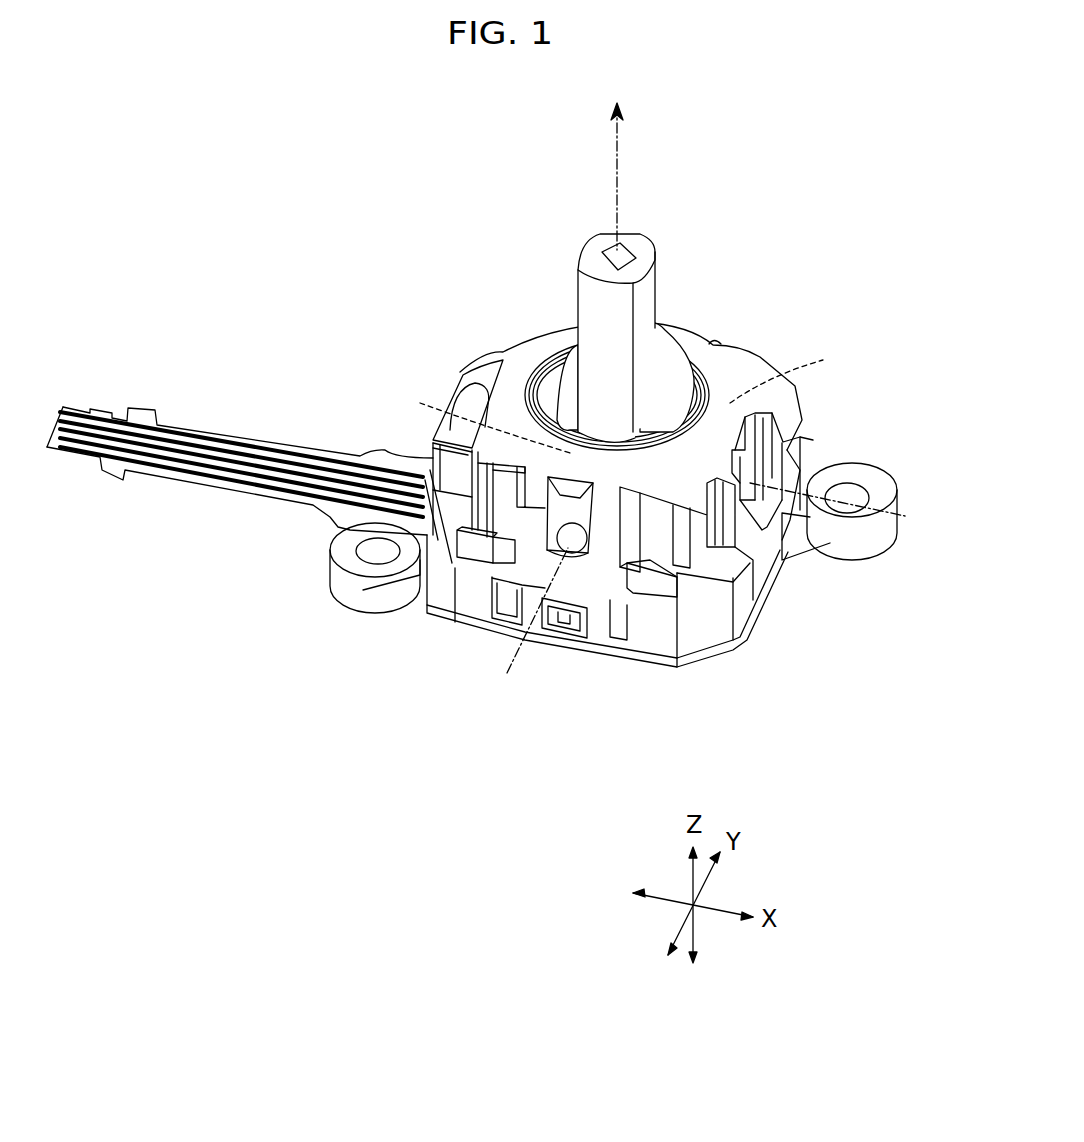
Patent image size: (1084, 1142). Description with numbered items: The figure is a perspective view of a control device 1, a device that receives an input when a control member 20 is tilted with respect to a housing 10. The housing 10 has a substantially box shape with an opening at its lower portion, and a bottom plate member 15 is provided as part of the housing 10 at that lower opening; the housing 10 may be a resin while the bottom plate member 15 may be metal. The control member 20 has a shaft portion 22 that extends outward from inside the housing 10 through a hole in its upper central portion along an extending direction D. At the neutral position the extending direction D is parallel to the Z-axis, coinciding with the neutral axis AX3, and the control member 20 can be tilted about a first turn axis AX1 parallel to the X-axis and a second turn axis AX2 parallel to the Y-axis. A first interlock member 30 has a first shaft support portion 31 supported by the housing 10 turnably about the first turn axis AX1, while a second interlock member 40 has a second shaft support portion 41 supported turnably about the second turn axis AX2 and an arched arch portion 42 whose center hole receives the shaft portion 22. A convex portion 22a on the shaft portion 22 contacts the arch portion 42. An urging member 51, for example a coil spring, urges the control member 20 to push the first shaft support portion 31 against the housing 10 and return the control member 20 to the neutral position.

The control device 1 is at (504, 376).
The housing 10 is at (727, 363).
The bottom plate member 15 is at (743, 598).
The control member 20 is at (618, 333).
The shaft portion 22 is at (669, 333).
The convex portion 22a is at (650, 372).
The first interlock member 30 is at (785, 352).
The first shaft support portion 31 is at (743, 470).
The second interlock member 40 is at (553, 363).
The second shaft support portion 41 is at (587, 553).
The arch portion 42 is at (557, 393).
The urging member 51 is at (425, 403).
The extending direction D is at (620, 143).
The first turn axis AX1 is at (855, 508).
The second turn axis AX2 is at (525, 628).
The neutral axis AX3 is at (615, 197).